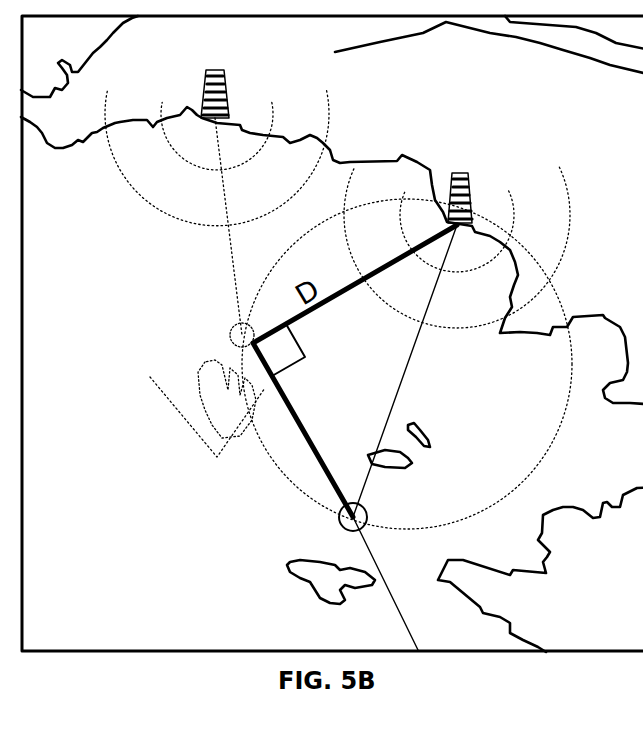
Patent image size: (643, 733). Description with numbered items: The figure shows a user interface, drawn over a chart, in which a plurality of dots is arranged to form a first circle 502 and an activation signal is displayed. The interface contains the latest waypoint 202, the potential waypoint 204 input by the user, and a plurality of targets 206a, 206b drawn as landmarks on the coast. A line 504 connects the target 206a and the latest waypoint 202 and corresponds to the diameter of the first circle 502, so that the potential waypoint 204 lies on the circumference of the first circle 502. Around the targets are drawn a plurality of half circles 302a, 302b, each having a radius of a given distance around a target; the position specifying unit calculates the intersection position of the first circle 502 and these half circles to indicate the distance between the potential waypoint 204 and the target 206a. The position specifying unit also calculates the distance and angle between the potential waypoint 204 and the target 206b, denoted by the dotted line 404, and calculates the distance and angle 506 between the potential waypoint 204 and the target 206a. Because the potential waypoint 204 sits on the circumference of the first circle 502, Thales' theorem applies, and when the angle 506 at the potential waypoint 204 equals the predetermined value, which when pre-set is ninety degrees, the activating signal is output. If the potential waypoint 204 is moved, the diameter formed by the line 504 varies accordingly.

The latest waypoint 202 is at (338, 520).
The potential waypoint 204 is at (232, 333).
The target 206a is at (472, 186).
The target 206b is at (224, 79).
The half circle 302a is at (362, 168).
The half circle 302b is at (150, 202).
The dotted line 404 is at (235, 262).
The first circle 502 is at (513, 242).
The line 504 is at (407, 373).
The angle 506 is at (307, 355).